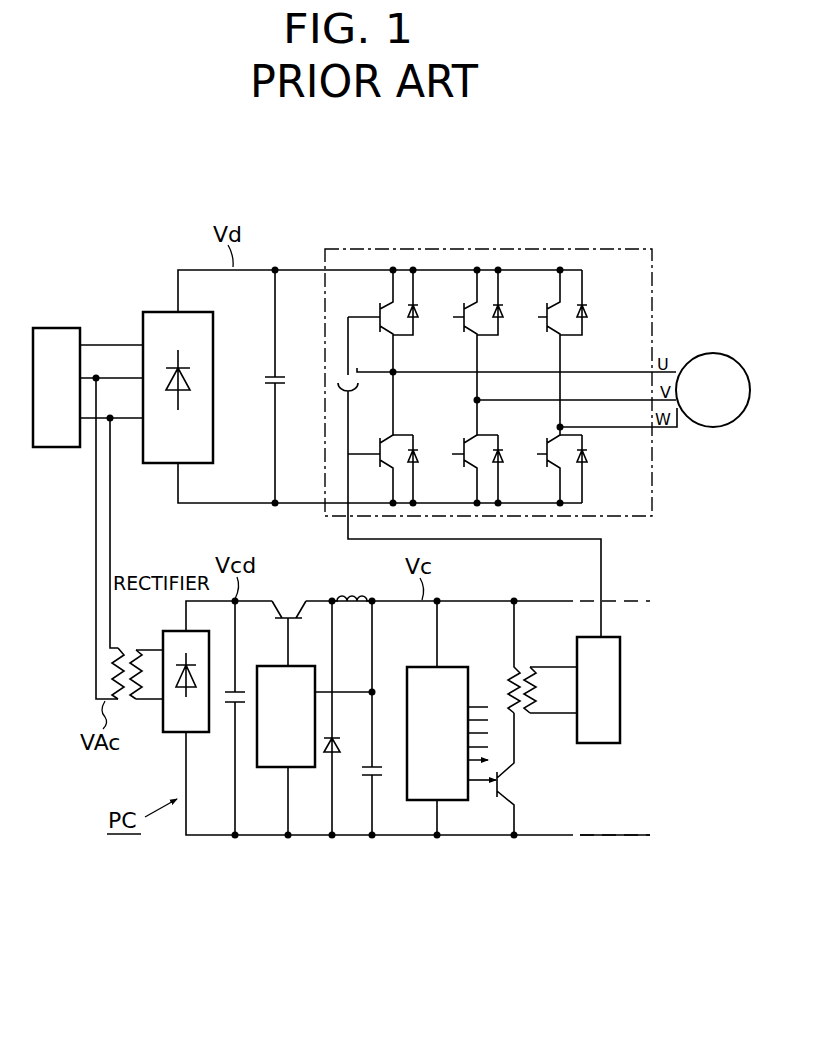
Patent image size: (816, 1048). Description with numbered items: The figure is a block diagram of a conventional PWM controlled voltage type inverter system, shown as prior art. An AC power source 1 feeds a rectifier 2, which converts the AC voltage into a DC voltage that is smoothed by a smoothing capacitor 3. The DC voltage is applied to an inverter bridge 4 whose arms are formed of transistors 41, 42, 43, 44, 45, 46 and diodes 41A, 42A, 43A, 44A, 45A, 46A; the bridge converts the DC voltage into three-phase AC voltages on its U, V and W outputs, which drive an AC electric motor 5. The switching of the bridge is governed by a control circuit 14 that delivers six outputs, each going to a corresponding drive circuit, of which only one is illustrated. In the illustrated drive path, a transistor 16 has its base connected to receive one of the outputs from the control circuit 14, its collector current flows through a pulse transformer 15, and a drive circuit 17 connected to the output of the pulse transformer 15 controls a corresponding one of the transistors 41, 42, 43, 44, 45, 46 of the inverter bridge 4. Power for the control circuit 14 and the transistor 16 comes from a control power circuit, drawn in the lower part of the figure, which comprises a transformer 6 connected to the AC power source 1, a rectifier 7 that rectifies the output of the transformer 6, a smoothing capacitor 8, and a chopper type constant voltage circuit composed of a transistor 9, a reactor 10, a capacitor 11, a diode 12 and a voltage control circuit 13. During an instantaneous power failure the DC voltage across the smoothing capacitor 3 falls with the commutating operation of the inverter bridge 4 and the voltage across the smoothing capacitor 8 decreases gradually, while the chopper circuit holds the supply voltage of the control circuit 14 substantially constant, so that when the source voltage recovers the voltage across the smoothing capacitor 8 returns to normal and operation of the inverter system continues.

The AC power source 1 is at (62, 328).
The rectifier 2 is at (158, 312).
The smoothing capacitor 3 is at (287, 375).
The inverter bridge 4 is at (499, 249).
The AC electric motor 5 is at (710, 353).
The transformer 6 is at (133, 648).
The rectifier 7 is at (178, 630).
The smoothing capacitor 8 is at (247, 677).
The transistor 9 is at (303, 598).
The reactor 10 is at (352, 598).
The capacitor 11 is at (385, 759).
The diode 12 is at (342, 735).
The voltage control circuit 13 is at (305, 665).
The control circuit 14 is at (420, 667).
The pulse transformer 15 is at (539, 656).
The transistor 16 is at (520, 784).
The drive circuit 17 is at (621, 688).
The transistor 41 is at (375, 312).
The transistor 42 is at (534, 448).
The transistor 43 is at (460, 312).
The transistor 44 is at (378, 444).
The transistor 45 is at (544, 312).
The transistor 46 is at (447, 448).
The diode 41A is at (415, 326).
The diode 42A is at (587, 462).
The diode 43A is at (500, 326).
The diode 44A is at (418, 462).
The diode 45A is at (584, 326).
The diode 46A is at (503, 462).